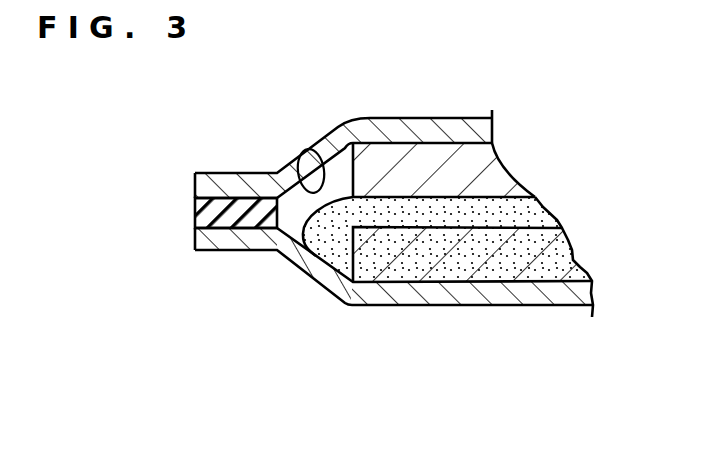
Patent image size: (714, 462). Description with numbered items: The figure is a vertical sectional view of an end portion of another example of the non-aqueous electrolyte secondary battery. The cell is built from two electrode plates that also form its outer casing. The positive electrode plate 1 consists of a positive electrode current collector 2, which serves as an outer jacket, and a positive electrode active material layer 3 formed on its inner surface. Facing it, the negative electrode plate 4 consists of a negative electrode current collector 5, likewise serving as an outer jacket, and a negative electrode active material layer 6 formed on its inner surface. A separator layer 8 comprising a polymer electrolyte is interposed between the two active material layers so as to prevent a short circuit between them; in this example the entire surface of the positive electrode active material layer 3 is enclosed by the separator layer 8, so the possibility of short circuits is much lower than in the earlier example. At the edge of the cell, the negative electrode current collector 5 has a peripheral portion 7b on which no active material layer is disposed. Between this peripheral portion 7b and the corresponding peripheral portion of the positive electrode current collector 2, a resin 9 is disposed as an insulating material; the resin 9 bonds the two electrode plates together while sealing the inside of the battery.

The positive electrode plate 1 is at (394, 317).
The positive electrode current collector 2 is at (428, 292).
The positive electrode active material layer 3 is at (492, 274).
The negative electrode plate 4 is at (365, 107).
The negative electrode current collector 5 is at (401, 124).
The negative electrode active material layer 6 is at (467, 166).
The peripheral portion of the negative electrode current collector 7b is at (300, 163).
The separator layer 8 is at (541, 206).
The resin 9 is at (208, 213).